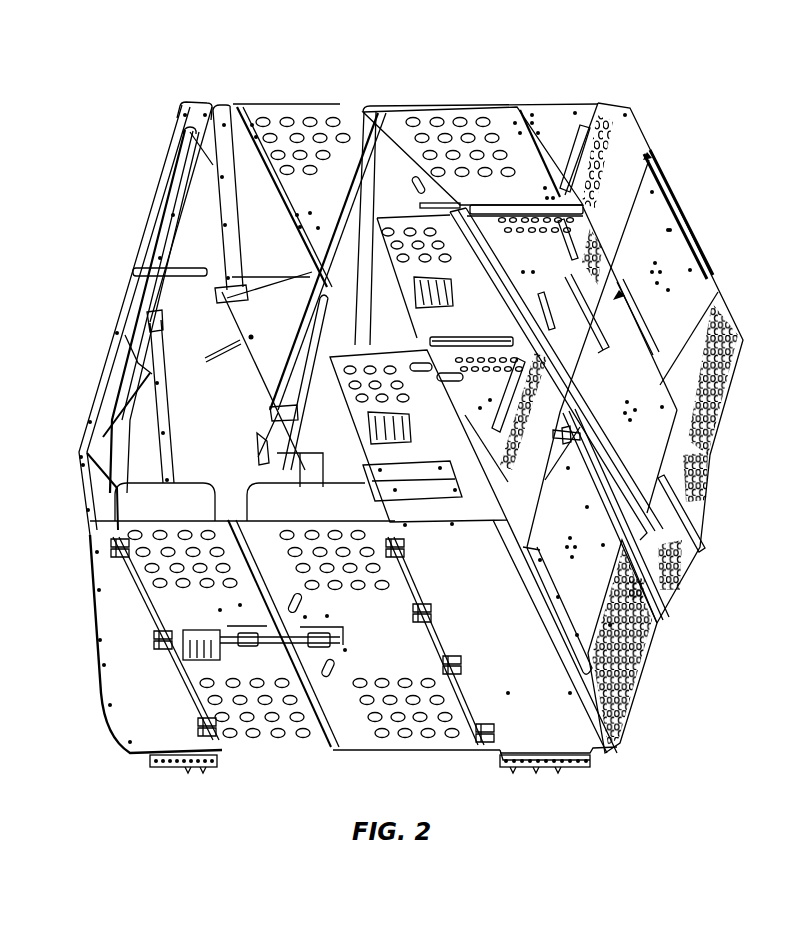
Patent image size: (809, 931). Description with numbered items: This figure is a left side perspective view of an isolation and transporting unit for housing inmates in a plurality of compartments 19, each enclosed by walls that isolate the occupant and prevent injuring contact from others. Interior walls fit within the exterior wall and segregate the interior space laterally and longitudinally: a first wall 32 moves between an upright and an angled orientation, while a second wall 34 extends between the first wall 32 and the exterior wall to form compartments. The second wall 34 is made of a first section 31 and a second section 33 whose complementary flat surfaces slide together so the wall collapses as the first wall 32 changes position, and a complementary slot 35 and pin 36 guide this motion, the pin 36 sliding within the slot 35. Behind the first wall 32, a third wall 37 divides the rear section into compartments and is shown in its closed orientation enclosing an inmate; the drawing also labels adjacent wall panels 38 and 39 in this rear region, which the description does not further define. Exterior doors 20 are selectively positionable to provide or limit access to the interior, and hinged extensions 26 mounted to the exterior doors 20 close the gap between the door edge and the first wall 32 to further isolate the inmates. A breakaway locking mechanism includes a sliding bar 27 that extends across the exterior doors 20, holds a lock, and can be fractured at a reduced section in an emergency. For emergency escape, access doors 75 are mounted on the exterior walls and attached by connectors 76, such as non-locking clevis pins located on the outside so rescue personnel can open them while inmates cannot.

The compartments 19 is at (227, 415).
The exterior doors 20 is at (497, 113).
The extensions 26 is at (257, 569).
The sliding bar 27 is at (280, 648).
The first section 31 is at (276, 319).
The first wall 32 is at (348, 172).
The second section 33 is at (206, 341).
The second wall 34 is at (190, 353).
The slot 35 is at (208, 360).
The pin 36 is at (253, 341).
The third wall 37 is at (450, 272).
The panel 38 is at (537, 262).
The panel 39 is at (450, 452).
The access doors 75 is at (680, 240).
The connectors 76 is at (650, 152).